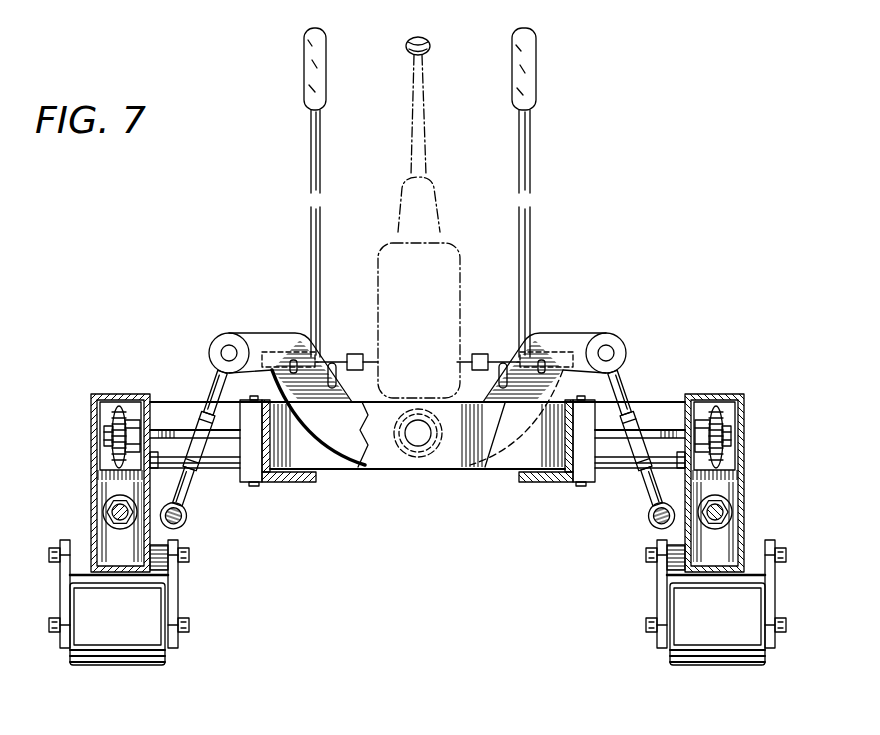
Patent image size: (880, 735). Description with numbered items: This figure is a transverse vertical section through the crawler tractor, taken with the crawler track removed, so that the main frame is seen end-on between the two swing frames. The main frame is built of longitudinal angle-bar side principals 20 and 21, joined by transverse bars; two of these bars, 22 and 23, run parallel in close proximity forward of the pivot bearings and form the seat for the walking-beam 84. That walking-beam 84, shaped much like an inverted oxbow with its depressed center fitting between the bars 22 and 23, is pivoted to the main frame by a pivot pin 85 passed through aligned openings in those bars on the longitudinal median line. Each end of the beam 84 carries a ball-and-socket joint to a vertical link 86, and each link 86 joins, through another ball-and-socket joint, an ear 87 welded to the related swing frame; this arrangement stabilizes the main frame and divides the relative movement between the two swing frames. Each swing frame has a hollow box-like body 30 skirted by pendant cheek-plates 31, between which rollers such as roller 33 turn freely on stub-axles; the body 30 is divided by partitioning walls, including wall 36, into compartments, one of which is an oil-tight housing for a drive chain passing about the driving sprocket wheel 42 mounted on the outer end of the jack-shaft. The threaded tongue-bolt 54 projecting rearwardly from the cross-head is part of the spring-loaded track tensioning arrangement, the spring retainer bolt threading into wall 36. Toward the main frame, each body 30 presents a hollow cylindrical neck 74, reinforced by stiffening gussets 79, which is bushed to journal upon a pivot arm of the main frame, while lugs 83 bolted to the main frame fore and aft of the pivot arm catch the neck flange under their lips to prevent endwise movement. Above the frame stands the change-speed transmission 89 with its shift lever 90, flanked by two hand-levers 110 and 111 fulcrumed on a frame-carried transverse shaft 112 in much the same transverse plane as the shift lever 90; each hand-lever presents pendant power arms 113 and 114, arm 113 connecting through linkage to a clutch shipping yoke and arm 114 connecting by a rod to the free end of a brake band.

The angle-bar side principal 20 is at (537, 485).
The angle-bar side principal 21 is at (292, 485).
The transverse bar 22 is at (393, 458).
The transverse bar 23 is at (333, 464).
The box-like body 30 is at (116, 393).
The cheek-plates 31 is at (66, 586).
The roller 33 is at (125, 664).
The partitioning wall 36 is at (100, 489).
The driving sprocket wheel 42 is at (110, 419).
The tongue-bolt 54 is at (113, 514).
The hollow cylindrical neck 74 is at (178, 413).
The stiffening gussets 79 is at (217, 440).
The lugs 83 is at (251, 470).
The walking-beam 84 is at (343, 442).
The pivot pin 85 is at (421, 434).
The vertical link 86 is at (217, 383).
The ear 87 is at (190, 528).
The change-speed transmission 89 is at (377, 316).
The shift lever 90 is at (425, 143).
The hand-lever 110 is at (534, 166).
The hand-lever 111 is at (306, 147).
The transverse shaft 112 is at (373, 356).
The power arm 113 is at (303, 395).
The power arm 114 is at (334, 379).